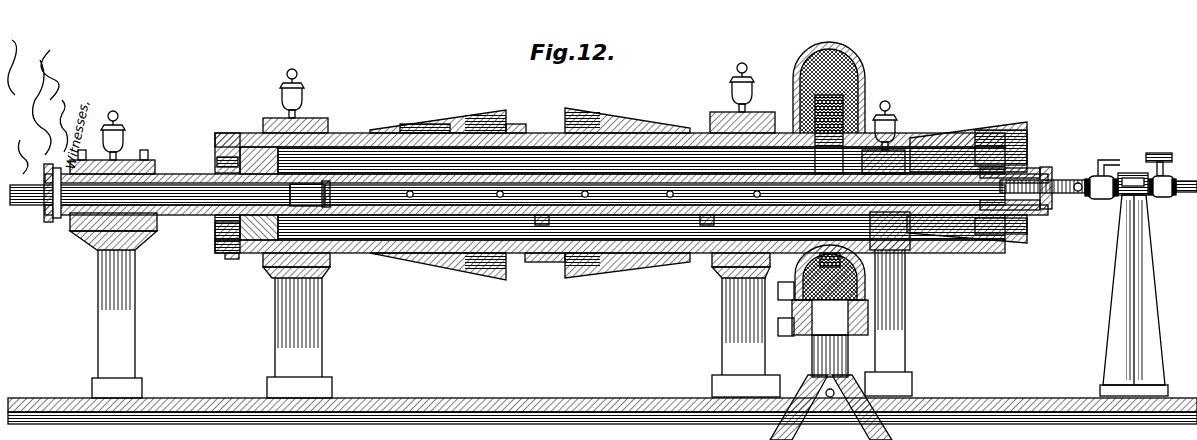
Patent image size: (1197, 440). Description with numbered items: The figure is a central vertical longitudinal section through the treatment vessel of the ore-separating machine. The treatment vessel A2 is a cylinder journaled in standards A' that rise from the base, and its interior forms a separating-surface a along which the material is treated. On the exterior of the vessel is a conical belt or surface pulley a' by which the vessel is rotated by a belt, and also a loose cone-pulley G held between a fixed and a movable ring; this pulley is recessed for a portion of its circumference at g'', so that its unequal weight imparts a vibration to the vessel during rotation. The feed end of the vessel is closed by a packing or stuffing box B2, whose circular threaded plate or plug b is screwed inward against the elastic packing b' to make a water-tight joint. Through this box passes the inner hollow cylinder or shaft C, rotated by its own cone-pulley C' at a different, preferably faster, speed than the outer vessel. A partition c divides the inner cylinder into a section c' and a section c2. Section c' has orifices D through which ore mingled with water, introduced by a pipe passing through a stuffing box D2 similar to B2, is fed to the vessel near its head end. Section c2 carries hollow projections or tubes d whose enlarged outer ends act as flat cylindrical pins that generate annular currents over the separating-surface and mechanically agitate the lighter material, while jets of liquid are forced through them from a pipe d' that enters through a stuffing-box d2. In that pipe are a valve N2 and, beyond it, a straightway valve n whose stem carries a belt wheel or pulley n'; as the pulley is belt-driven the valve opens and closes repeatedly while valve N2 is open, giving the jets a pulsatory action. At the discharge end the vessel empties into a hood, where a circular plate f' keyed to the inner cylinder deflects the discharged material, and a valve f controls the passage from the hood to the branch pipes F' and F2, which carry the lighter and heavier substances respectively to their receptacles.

The packing or stuffing box B2 is at (271, 140).
The inner cylinder or shaft C is at (546, 181).
The packing or stuffing box D2 is at (56, 214).
The section of inner cylinder c' is at (150, 195).
The orifices D is at (310, 194).
The partition c is at (665, 195).
The section of inner cylinder c2 is at (573, 193).
The hollow projections or tubes d is at (573, 205).
The circular threaded plate or plug b is at (237, 234).
The elastic packing b' is at (237, 264).
The interior separating-surface a is at (518, 266).
The standards A' is at (491, 305).
The loose cone-pulley G is at (420, 125).
The recess g'' is at (513, 107).
The treatment vessel A2 is at (535, 147).
The conical belt or surface pulley a' is at (627, 112).
The branch pipe F' is at (841, 107).
The branch pipe F2 is at (880, 428).
The valve f is at (831, 387).
The circular plate f' is at (851, 256).
The cone-pulley C' is at (967, 174).
The stuffing-box d2 is at (1046, 167).
The pipe d' is at (1042, 174).
The valve N2 is at (1100, 199).
The valve nipple N' is at (1109, 155).
The belt wheel or pulley n' is at (1159, 156).
The valve n is at (1173, 195).